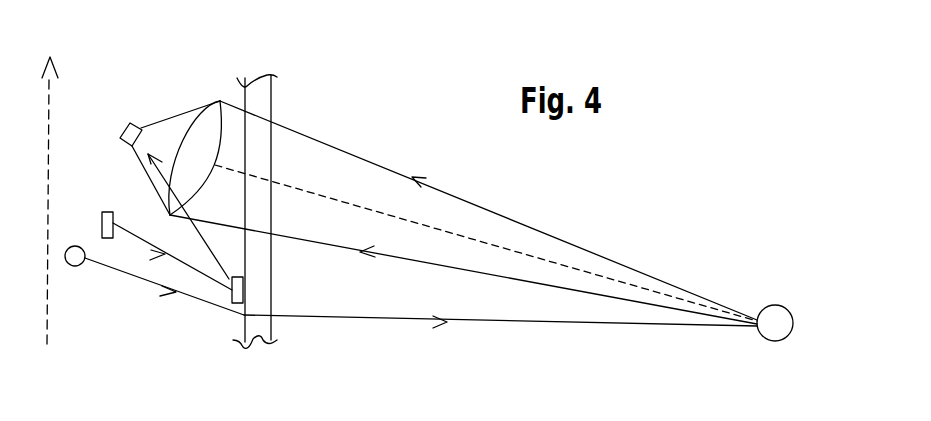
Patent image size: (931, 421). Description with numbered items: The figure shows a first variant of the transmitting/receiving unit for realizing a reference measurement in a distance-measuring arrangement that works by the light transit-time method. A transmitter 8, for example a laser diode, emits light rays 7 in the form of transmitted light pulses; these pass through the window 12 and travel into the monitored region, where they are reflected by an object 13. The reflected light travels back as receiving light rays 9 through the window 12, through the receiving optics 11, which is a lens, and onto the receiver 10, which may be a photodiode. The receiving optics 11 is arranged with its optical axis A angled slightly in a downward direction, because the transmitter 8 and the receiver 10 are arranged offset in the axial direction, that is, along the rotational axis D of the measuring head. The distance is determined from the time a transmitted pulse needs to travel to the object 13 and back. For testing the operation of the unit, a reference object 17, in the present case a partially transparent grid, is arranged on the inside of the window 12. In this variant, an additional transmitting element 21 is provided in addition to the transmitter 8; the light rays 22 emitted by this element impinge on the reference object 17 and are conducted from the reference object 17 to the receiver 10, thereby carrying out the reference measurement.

The light rays 7 is at (508, 324).
The transmitter 8 is at (75, 246).
The light rays 9 is at (332, 246).
The receiver 10 is at (125, 127).
The receiving optics 11 is at (206, 125).
The window 12 is at (267, 99).
The object 13 is at (775, 317).
The reference object 17 is at (233, 303).
The additional transmitting element 21 is at (107, 212).
The light rays 22 is at (138, 237).
The optical axis A is at (600, 275).
The rotational axis D is at (50, 184).